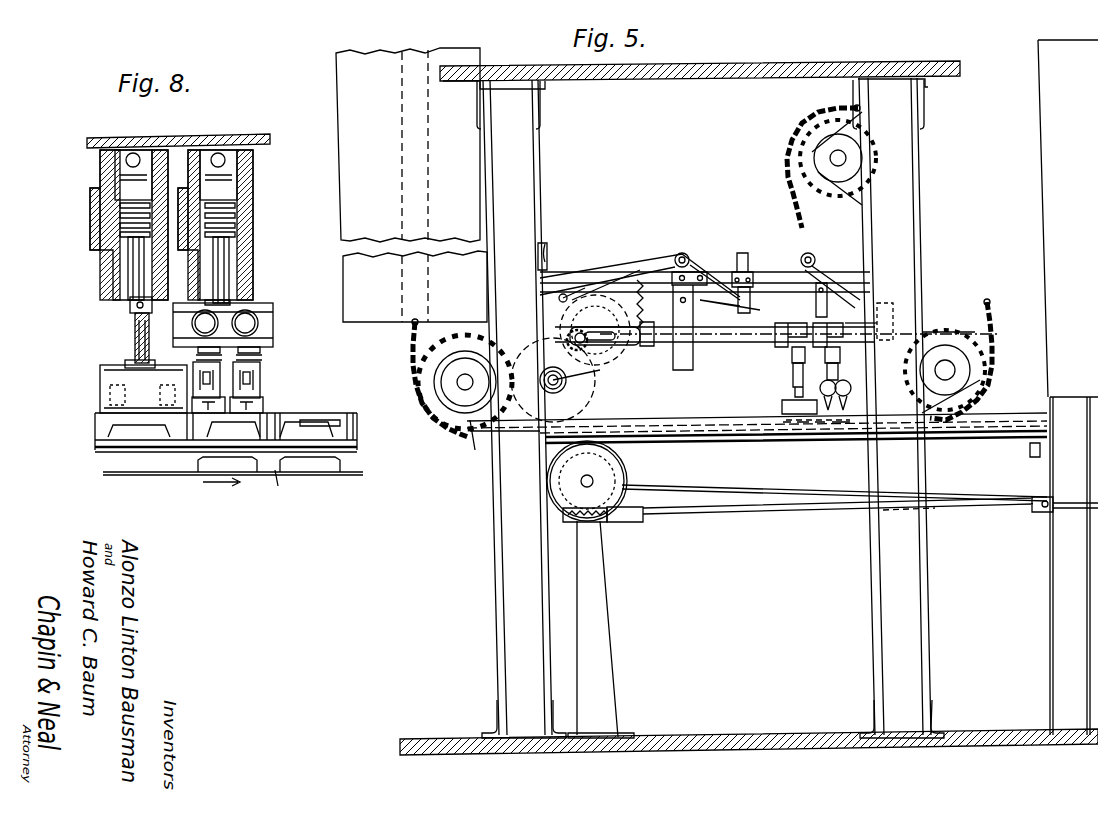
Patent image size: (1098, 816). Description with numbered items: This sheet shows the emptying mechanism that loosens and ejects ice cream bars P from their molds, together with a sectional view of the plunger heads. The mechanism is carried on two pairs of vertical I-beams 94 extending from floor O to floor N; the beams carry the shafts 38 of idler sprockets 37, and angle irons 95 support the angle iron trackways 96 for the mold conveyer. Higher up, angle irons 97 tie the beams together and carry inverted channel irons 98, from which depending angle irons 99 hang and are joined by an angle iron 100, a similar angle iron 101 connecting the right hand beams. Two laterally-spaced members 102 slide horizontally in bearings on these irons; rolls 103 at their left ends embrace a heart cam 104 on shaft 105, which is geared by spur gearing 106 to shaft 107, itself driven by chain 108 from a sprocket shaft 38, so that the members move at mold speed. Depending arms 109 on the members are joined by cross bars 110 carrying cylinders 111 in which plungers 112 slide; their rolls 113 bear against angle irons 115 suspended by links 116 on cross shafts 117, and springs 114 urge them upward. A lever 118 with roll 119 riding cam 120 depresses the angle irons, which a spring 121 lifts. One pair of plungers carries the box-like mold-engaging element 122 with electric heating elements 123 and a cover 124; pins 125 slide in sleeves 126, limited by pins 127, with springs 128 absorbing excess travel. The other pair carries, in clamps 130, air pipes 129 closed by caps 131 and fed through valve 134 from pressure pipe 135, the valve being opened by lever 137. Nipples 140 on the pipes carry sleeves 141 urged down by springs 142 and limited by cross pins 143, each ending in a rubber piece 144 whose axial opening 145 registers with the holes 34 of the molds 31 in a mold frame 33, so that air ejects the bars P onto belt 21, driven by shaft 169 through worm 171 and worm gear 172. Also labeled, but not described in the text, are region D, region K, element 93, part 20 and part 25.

In FIG. 5, the floor N is at (734, 66).
In FIG. 5, the die space D is at (638, 107).
In FIG. 5, the frame K is at (1068, 387).
In FIG. 5, the floor O is at (681, 738).
In FIG. 5, the vertical I-beams 94 is at (710, 408).
In FIG. 5, the housing 93 is at (340, 161).
In FIG. 5, the chain end link 20 is at (844, 106).
In FIG. 5, the idler sprockets 37 is at (800, 128).
In FIG. 5, the shafts 38 is at (846, 158).
In FIG. 5, the angle irons 95 is at (478, 447).
In FIG. 5, the links 116 is at (880, 290).
In FIG. 5, the laterally-spaced members 102 is at (690, 345).
In FIG. 5, the angle iron trackways 96 is at (678, 415).
In FIG. 8, the angle iron trackways 96 is at (344, 388).
In FIG. 5, the belt 21 is at (676, 446).
In FIG. 8, the belt 21 is at (287, 490).
In FIG. 5, the angle irons 97 is at (550, 260).
In FIG. 5, the lever 118 is at (647, 250).
In FIG. 5, the cross shafts 117 is at (682, 252).
In FIG. 5, the lever 137 is at (706, 262).
In FIG. 5, the pipe 135 is at (744, 253).
In FIG. 5, the spring 121 is at (621, 262).
In FIG. 5, the roll 119 is at (564, 294).
In FIG. 5, the inverted channel irons 98 is at (590, 294).
In FIG. 5, the cam 120 is at (559, 297).
In FIG. 5, the shaft 105 is at (564, 339).
In FIG. 5, the rolls 103 is at (570, 320).
In FIG. 5, the heart cam 104 is at (620, 348).
In FIG. 5, the angle iron 100 is at (652, 346).
In FIG. 5, the angle irons 99 is at (689, 328).
In FIG. 5, the spur gearing 106 is at (596, 386).
In FIG. 5, the shaft 107 is at (554, 384).
In FIG. 5, the chain 108 is at (523, 440).
In FIG. 5, the valve 134 is at (760, 310).
In FIG. 5, the depending arms 109 is at (788, 368).
In FIG. 5, the cross bar 110 is at (793, 349).
In FIG. 8, the cross bar 110 is at (104, 157).
In FIG. 5, the cylinders 111 is at (799, 370).
In FIG. 8, the cylinders 111 is at (128, 256).
In FIG. 5, the angle iron 101 is at (850, 345).
In FIG. 5, the clamps 130 is at (852, 388).
In FIG. 8, the clamps 130 is at (274, 322).
In FIG. 5, the pipes 129 is at (846, 398).
In FIG. 8, the pipes 129 is at (263, 300).
In FIG. 5, the mold-engaging element 122 is at (780, 396).
In FIG. 8, the mold-engaging element 122 is at (186, 476).
In FIG. 5, the worm gear 172 is at (583, 485).
In FIG. 5, the worm 171 is at (570, 522).
In FIG. 5, the shaft 169 is at (745, 518).
In FIG. 8, the angle irons 115 is at (257, 136).
In FIG. 8, the plungers 112 is at (126, 272).
In FIG. 8, the rolls 113 is at (135, 148).
In FIG. 8, the springs 114 is at (130, 221).
In FIG. 8, the sleeve 126 is at (128, 309).
In FIG. 8, the upstanding pins 125 is at (132, 332).
In FIG. 8, the pin 127 is at (134, 347).
In FIG. 8, the cover 124 is at (126, 362).
In FIG. 8, the spring 128 is at (206, 304).
In FIG. 8, the cap 131 is at (269, 304).
In FIG. 8, the spring 142 is at (272, 348).
In FIG. 8, the nipples 140 is at (284, 362).
In FIG. 8, the cross pin 143 is at (260, 373).
In FIG. 8, the sleeve 141 is at (305, 375).
In FIG. 8, the axial opening 145 is at (263, 398).
In FIG. 8, the rubber piece 144 is at (266, 408).
In FIG. 8, the electric heating elements 123 is at (143, 389).
In FIG. 8, the carriage 25 is at (340, 412).
In FIG. 8, the holes 34 is at (330, 420).
In FIG. 8, the mold frame 33 is at (354, 423).
In FIG. 8, the molds 31 is at (347, 450).
In FIG. 8, the ice cream bar P is at (136, 464).